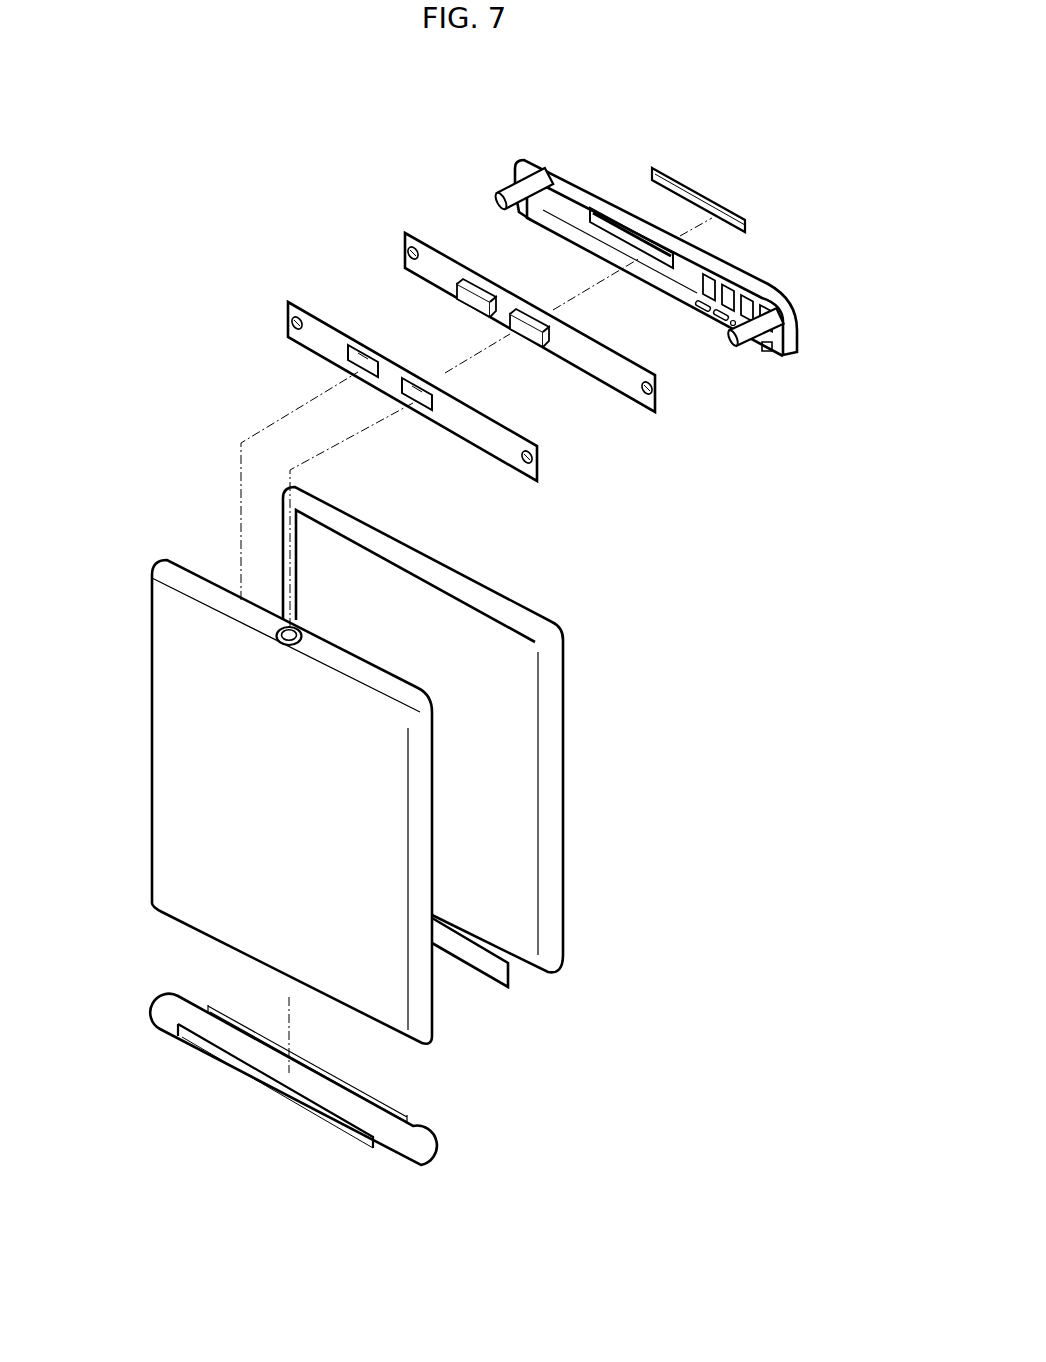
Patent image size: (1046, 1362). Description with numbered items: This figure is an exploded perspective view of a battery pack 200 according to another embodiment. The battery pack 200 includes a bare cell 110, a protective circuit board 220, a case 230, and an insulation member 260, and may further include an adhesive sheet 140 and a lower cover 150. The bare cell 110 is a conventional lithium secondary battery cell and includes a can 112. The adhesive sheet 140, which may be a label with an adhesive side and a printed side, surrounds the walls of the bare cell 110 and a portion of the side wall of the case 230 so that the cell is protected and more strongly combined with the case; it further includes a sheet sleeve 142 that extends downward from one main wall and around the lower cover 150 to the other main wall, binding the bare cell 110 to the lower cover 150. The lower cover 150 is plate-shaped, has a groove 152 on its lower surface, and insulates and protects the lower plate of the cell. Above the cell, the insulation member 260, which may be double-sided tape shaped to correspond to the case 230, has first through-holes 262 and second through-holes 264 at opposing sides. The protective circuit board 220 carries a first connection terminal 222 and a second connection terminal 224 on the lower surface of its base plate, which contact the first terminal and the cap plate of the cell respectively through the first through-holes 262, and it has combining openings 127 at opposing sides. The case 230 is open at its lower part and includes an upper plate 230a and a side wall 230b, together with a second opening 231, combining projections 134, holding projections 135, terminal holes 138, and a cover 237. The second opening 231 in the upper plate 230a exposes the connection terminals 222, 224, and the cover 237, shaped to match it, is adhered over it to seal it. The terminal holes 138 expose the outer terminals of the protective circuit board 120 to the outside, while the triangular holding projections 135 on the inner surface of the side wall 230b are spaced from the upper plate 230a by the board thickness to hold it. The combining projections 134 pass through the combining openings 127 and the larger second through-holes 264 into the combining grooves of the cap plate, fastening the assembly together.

The battery pack 200 is at (74, 343).
The bare cell 110 is at (251, 761).
The can 112 is at (178, 797).
The adhesive sheet 140 is at (555, 776).
The sheet sleeve 142 is at (482, 968).
The lower cover 150 is at (246, 1079).
The groove 152 is at (248, 1078).
The insulation member 260 is at (395, 408).
The first through-holes 262 is at (405, 399).
The second through-holes 264 is at (288, 320).
The protective circuit board 220 is at (535, 347).
The protective circuit board 120 is at (497, 347).
The combining openings 127 is at (406, 252).
The first connection terminal 222 is at (521, 343).
The second connection terminal 224 is at (474, 300).
The case 230 is at (669, 255).
The upper plate 230a is at (560, 200).
The side wall 230b is at (524, 158).
The second opening 231 is at (612, 228).
The combining projections 134 is at (500, 186).
The holding projections 135 is at (716, 328).
The terminal holes 138 is at (722, 278).
The cover 237 is at (690, 183).